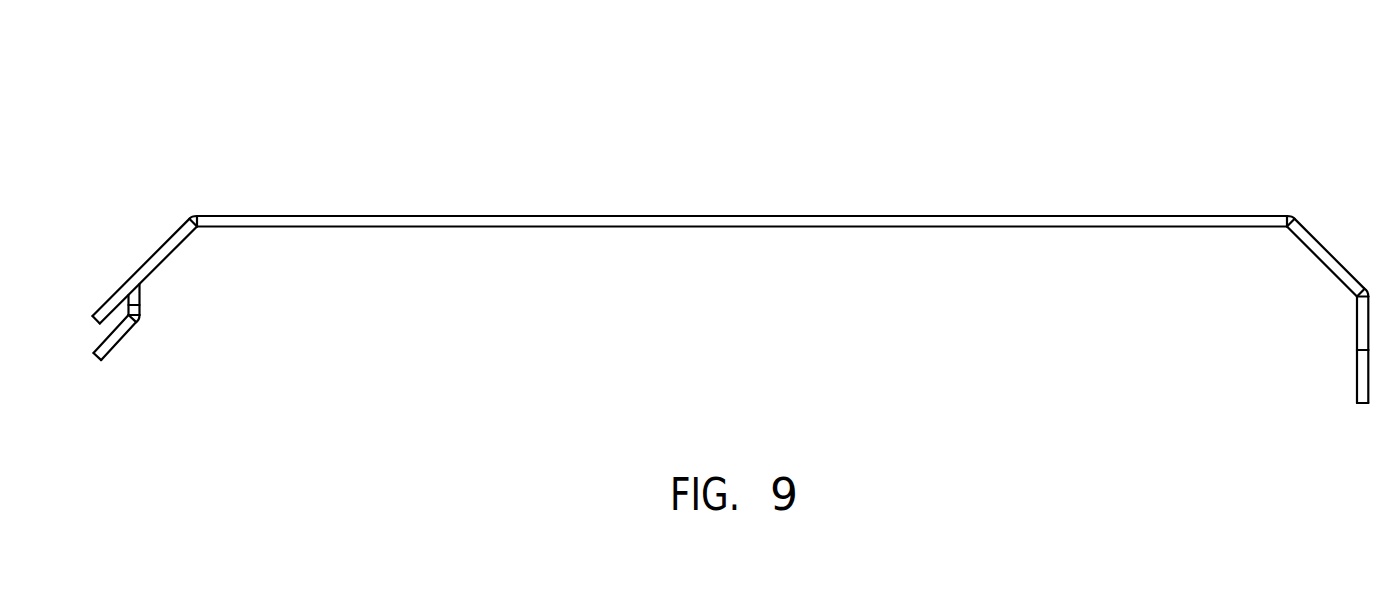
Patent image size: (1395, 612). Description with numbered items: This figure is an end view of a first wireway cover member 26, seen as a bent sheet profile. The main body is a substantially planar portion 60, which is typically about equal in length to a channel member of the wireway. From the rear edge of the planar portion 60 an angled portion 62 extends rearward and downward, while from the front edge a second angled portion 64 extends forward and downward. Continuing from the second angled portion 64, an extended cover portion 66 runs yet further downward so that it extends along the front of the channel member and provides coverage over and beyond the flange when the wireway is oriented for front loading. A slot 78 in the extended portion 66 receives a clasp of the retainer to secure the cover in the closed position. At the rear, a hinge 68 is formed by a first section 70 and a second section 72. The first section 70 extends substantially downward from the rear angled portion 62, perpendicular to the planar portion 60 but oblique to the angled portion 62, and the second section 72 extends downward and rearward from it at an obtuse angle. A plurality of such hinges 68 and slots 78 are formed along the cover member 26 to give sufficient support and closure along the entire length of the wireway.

The cover member 26 is at (938, 108).
The planar portion 60 is at (745, 213).
The angled portion 62 is at (140, 268).
The second angled portion 64 is at (1334, 249).
The extended cover portion 66 is at (1357, 380).
The hinge 68 is at (177, 334).
The first section 70 is at (141, 297).
The second section 72 is at (117, 350).
The slot 78 is at (1357, 322).